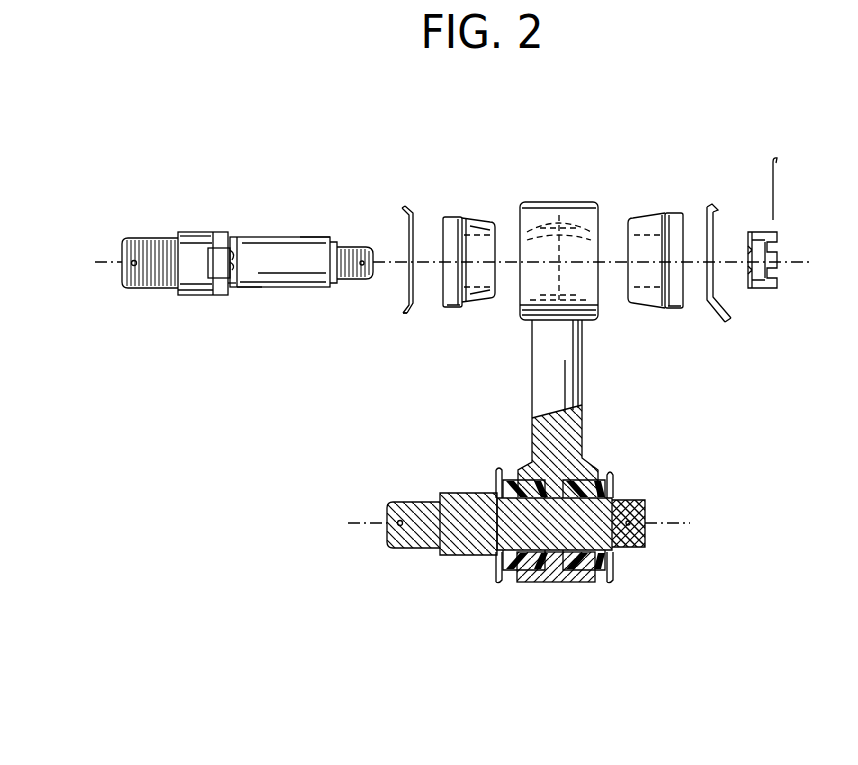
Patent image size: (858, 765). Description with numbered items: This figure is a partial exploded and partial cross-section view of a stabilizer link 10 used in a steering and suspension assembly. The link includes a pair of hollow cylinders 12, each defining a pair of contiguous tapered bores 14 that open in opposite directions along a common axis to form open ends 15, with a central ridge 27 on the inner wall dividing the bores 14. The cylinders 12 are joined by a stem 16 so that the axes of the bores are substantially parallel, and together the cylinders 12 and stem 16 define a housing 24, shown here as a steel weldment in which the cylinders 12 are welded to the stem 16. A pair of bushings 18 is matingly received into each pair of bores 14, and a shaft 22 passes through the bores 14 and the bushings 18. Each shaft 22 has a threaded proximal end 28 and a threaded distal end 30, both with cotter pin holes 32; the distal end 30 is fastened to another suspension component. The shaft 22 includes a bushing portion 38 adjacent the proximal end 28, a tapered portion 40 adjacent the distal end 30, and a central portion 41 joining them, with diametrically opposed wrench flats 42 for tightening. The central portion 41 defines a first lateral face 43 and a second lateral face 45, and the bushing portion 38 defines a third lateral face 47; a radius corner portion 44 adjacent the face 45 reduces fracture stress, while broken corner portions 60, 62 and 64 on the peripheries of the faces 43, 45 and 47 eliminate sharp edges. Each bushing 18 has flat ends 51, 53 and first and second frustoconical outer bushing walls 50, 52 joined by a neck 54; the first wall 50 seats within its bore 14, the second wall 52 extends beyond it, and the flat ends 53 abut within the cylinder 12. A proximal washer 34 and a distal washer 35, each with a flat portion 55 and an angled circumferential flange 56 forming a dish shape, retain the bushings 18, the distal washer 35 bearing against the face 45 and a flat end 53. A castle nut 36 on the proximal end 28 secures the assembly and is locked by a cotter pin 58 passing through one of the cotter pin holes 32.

The stabilizer link 10 is at (630, 118).
The cylinder 12 is at (558, 200).
The tapered bore 14 is at (513, 250).
The open end 15 is at (516, 311).
The stem 16 is at (583, 394).
The bushing 18 is at (450, 310).
The shaft 22 is at (204, 302).
The housing 24 is at (586, 380).
The central ridge 27 is at (530, 330).
The proximal end 28 is at (350, 281).
The distal end 30 is at (140, 288).
The cotter pin hole 32 is at (130, 262).
The proximal washer 34 is at (728, 324).
The distal washer 35 is at (401, 316).
The nut 36 is at (786, 239).
The bushing portion 38 is at (286, 237).
The tapered portion 40 is at (189, 232).
The central portion 41 is at (224, 248).
The wrench flats 42 is at (233, 249).
The radius corner portion 44 is at (239, 259).
The first lateral face 43 is at (178, 296).
The second lateral face 45 is at (239, 288).
The third lateral face 47 is at (330, 240).
The first outer bushing wall 50 is at (469, 221).
The flat end 51 is at (503, 234).
The second outer bushing wall 52 is at (457, 219).
The flat end 53 is at (443, 286).
The neck 54 is at (470, 217).
The flat portion 55 is at (399, 301).
The circumferential flange 56 is at (403, 209).
The cotter pin 58 is at (778, 163).
The broken corner portion 60 is at (180, 233).
The broken corner portion 62 is at (230, 289).
The broken corner portion 64 is at (330, 288).